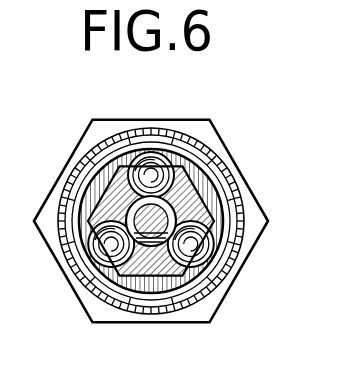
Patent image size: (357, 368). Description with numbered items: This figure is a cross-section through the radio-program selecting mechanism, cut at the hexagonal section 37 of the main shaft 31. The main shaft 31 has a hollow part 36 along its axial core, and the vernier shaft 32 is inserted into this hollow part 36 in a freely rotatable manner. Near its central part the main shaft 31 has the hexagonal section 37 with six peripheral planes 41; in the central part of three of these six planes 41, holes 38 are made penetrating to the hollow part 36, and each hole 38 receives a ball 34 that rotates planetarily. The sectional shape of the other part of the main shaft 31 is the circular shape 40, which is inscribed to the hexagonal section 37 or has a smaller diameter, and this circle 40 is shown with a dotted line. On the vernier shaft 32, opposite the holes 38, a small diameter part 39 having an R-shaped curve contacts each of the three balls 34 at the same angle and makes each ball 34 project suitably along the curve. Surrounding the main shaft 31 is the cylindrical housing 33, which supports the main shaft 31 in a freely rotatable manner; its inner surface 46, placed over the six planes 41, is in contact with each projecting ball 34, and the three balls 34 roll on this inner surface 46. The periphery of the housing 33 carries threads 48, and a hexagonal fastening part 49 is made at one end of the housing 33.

The main shaft 31 is at (104, 148).
The vernier shaft 32 is at (202, 180).
The cylindrical housing 33 is at (149, 140).
The balls 34 is at (238, 238).
The hollow part 36 is at (137, 296).
The hexagonal section 37 is at (86, 186).
The holes 38 is at (85, 200).
The small diameter part 39 is at (222, 205).
The circular shape 40 is at (130, 247).
The peripheral planes 41 is at (168, 300).
The inner surface 46 is at (211, 305).
The threads 48 is at (212, 152).
The hexagonal fastening part 49 is at (193, 135).